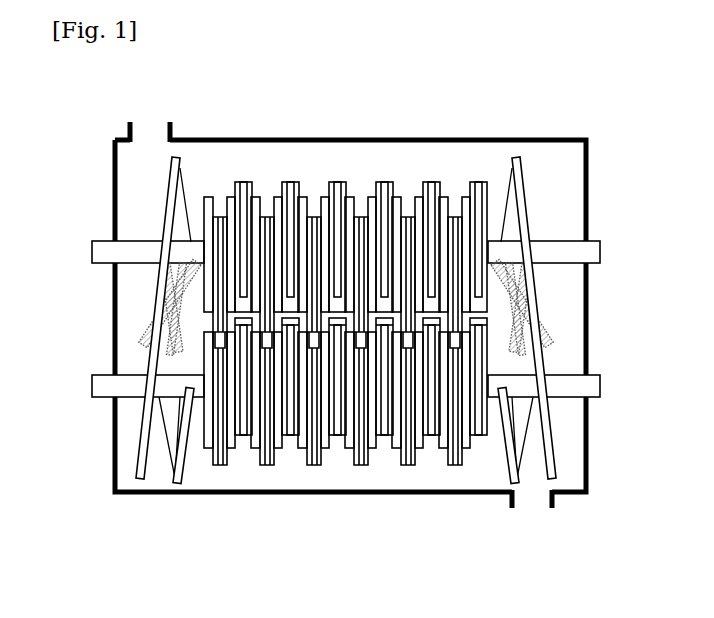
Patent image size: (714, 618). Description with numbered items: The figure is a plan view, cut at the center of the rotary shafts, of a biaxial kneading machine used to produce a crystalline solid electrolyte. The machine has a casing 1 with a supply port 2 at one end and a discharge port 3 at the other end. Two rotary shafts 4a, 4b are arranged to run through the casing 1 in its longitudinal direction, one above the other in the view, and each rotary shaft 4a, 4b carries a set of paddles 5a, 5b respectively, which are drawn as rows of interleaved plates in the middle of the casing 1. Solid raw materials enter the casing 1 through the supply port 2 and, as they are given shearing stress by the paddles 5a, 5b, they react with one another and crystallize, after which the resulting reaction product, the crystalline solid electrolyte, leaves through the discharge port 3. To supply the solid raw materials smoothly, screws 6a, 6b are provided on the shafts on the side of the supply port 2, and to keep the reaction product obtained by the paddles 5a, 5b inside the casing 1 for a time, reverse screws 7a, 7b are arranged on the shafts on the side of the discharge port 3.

The casing 1 is at (455, 138).
The supply port 2 is at (150, 126).
The discharge port 3 is at (533, 502).
The rotary shaft 4a is at (97, 241).
The rotary shaft 4b is at (97, 375).
The paddle 5a is at (365, 185).
The paddle 5b is at (385, 440).
The screw 6a is at (180, 155).
The screw 6b is at (179, 483).
The reverse screw 7a is at (515, 153).
The reverse screw 7b is at (507, 467).